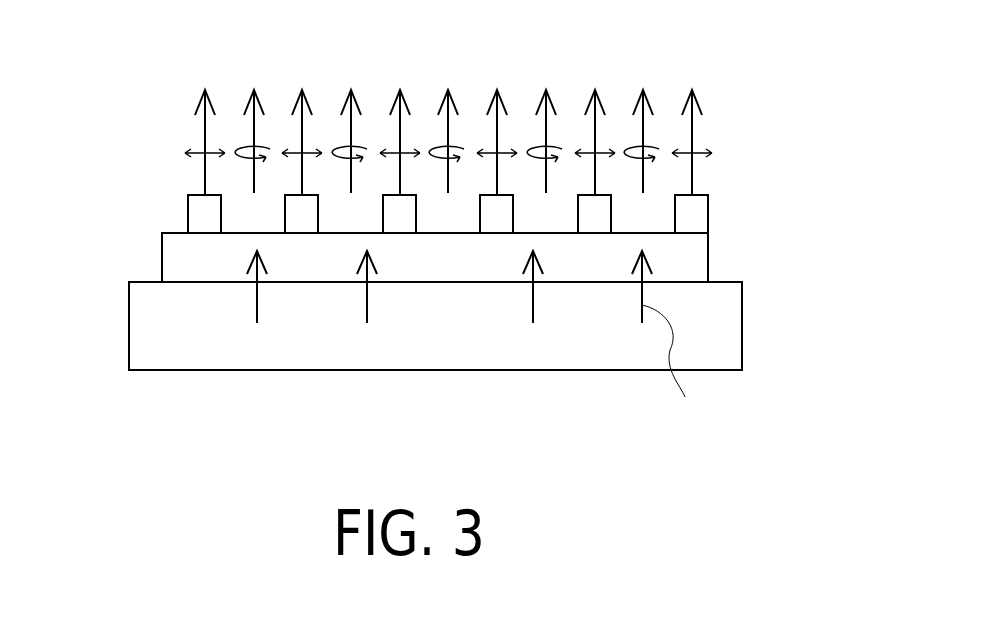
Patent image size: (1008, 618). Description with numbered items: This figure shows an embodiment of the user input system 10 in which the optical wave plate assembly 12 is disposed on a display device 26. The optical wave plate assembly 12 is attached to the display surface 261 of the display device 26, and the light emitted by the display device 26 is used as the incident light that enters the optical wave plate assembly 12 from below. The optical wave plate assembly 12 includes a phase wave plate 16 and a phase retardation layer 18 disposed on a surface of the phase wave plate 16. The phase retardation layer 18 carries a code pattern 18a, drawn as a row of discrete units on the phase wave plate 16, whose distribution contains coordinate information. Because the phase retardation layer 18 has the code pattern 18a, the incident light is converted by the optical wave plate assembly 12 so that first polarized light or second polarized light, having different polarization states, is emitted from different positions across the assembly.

The user input system 10 is at (473, 245).
The optical wave plate assembly 12 is at (500, 197).
The phase wave plate 16 is at (702, 263).
The phase retardation layer 18 is at (471, 173).
The code pattern 18a is at (194, 192).
The display device 26 is at (453, 281).
The display surface 261 is at (140, 281).